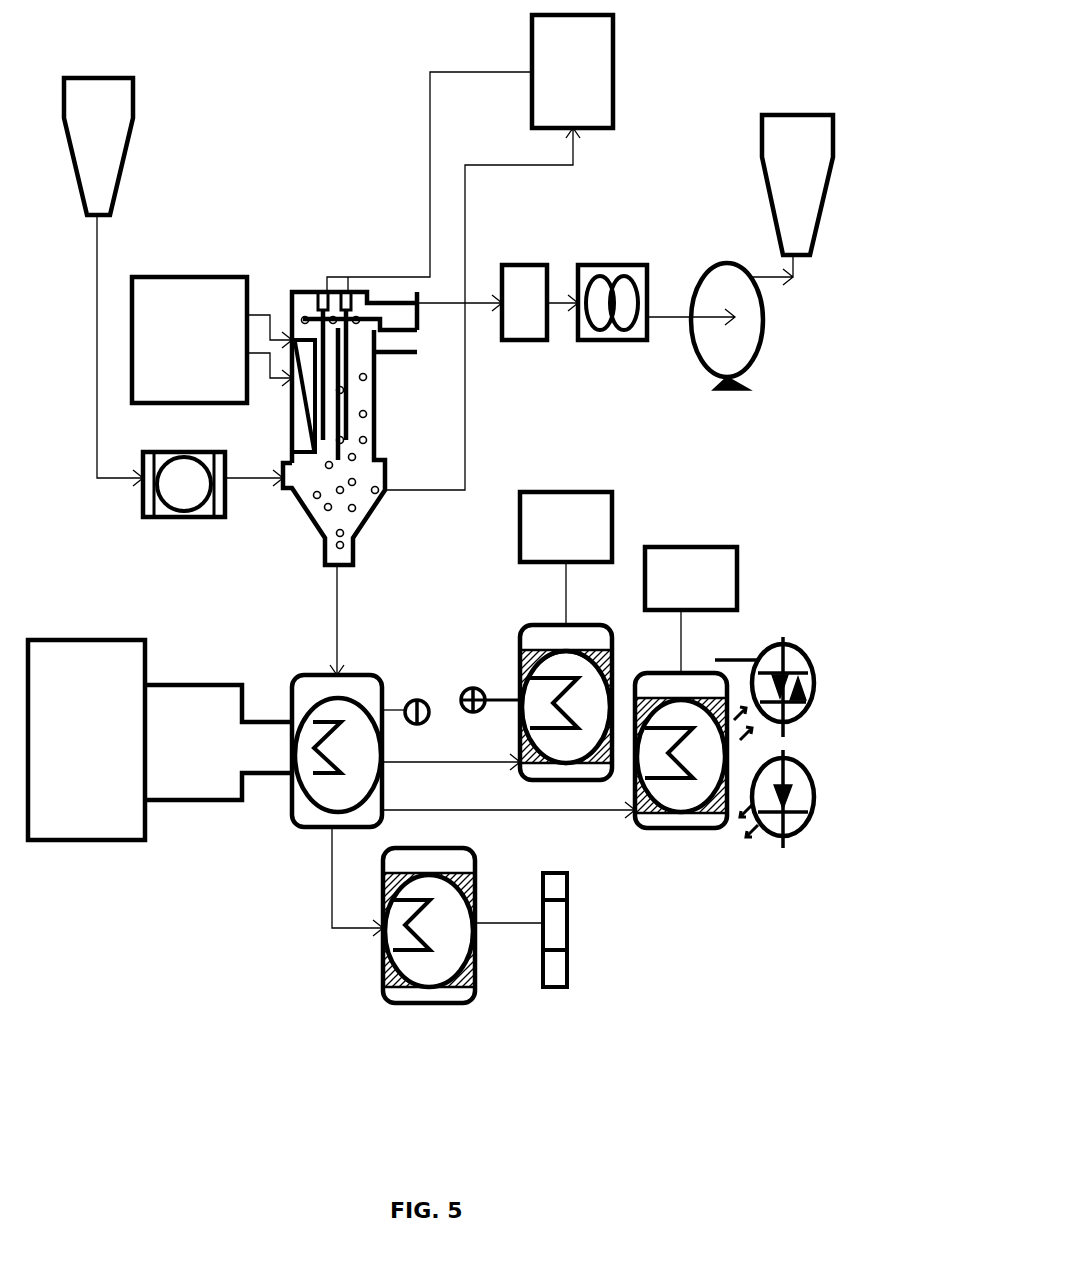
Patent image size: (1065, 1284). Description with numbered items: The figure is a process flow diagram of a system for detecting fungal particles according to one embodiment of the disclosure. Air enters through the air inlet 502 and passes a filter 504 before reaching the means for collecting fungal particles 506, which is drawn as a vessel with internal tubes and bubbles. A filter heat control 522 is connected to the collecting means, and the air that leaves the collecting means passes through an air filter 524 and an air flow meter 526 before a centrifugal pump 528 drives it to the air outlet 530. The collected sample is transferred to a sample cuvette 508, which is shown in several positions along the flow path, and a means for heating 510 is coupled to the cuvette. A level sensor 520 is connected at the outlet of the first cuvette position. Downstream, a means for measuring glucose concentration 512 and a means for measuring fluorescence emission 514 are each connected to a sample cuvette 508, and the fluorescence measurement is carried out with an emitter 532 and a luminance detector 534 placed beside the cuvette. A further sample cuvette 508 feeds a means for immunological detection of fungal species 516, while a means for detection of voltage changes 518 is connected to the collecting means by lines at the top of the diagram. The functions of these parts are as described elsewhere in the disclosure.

The air inlet 502 is at (133, 108).
The filter 504 is at (143, 507).
The means for collecting fungal particles 506 is at (302, 292).
The sample cuvette 508 is at (313, 827).
The means for heating 510 is at (127, 840).
The means for measuring glucose concentration 512 is at (590, 492).
The means for measuring fluorescence emission 514 is at (680, 547).
The means for immunological detection of fungal species 516 is at (557, 987).
The means for detection of voltage changes 518 is at (613, 32).
The level sensor 520 is at (412, 700).
The filter heat control 522 is at (237, 277).
The air filter 524 is at (525, 340).
The air flow meter 526 is at (592, 265).
The centrifugal pump 528 is at (710, 267).
The air outlet 530 is at (805, 252).
The emitter 532 is at (795, 835).
The luminance detector 534 is at (795, 645).